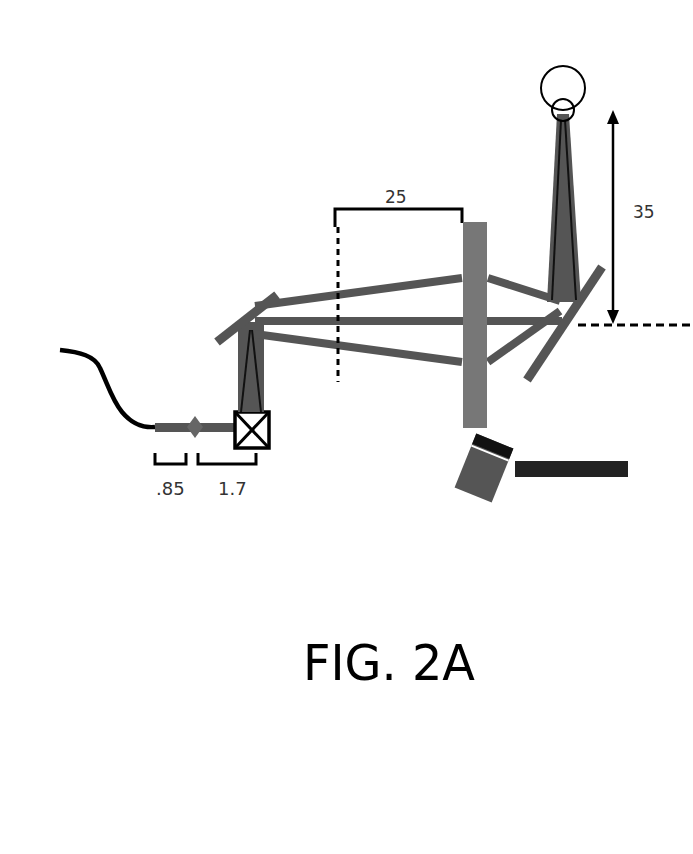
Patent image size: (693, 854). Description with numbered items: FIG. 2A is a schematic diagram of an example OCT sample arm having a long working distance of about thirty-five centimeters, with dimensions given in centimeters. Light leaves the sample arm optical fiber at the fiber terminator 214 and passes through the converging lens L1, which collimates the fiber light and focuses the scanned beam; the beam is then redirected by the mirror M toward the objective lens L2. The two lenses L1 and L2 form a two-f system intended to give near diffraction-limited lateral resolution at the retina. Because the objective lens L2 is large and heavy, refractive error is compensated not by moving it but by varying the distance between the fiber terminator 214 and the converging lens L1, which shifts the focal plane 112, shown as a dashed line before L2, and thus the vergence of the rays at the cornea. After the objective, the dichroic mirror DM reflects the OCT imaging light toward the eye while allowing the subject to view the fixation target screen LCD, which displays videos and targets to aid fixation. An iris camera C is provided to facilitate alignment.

The fiber terminator 214 is at (98, 360).
The focal plane 112 is at (340, 382).
The converging lens L1 is at (197, 417).
The objective lens L2 is at (477, 312).
The mirror M is at (247, 313).
The dichroic mirror DM is at (609, 323).
The iris camera C is at (484, 482).
The fixation target screen LCD is at (571, 490).